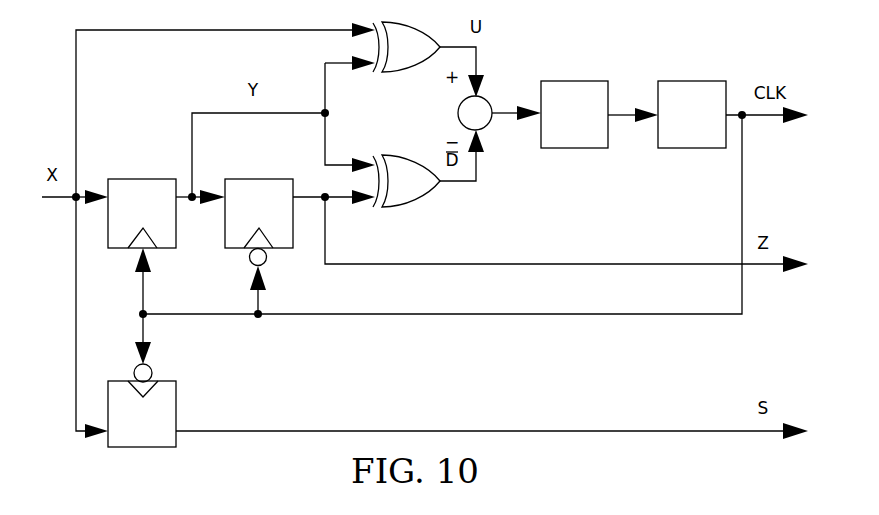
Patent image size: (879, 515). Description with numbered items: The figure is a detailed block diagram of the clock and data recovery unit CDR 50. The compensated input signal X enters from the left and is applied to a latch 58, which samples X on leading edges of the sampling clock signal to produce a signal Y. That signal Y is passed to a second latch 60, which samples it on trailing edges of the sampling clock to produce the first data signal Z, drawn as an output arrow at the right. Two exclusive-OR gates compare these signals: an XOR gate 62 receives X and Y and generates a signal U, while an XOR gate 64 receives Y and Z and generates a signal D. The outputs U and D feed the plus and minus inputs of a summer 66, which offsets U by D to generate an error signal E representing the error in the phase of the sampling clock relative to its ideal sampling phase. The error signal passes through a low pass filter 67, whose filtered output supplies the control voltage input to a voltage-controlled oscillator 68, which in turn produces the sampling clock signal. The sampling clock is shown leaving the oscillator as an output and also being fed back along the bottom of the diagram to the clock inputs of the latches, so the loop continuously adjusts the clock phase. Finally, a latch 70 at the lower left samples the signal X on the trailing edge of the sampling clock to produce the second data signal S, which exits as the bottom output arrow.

The CDR 50 is at (72, 457).
The latch 58 is at (132, 223).
The latch 60 is at (249, 223).
The XOR gate 62 is at (402, 56).
The XOR gate 64 is at (402, 190).
The summer 66 is at (460, 111).
The low pass filter 67 is at (575, 142).
The voltage-controlled oscillator 68 is at (692, 142).
The latch 70 is at (132, 419).